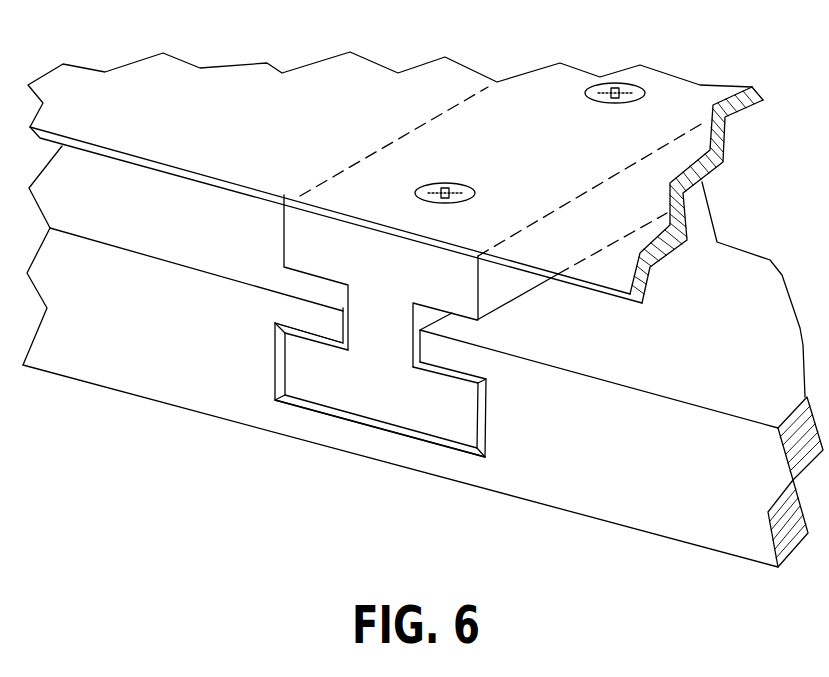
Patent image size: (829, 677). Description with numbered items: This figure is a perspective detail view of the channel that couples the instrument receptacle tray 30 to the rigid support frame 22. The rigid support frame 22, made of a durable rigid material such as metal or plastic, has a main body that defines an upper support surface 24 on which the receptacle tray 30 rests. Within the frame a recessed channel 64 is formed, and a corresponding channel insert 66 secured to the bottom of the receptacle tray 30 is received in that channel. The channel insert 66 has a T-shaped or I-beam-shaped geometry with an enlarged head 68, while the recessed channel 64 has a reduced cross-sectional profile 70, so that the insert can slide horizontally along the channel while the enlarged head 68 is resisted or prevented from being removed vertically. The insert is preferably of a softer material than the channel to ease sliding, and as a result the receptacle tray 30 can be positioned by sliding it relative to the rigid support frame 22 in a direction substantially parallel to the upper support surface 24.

The instrument receptacle tray 30 is at (312, 87).
The rigid support frame 22 is at (618, 487).
The upper support surface 24 is at (695, 338).
The recessed channel 64 is at (324, 414).
The channel insert 66 is at (450, 285).
The enlarged head 68 is at (450, 410).
The reduced cross-sectional profile 70 is at (338, 325).